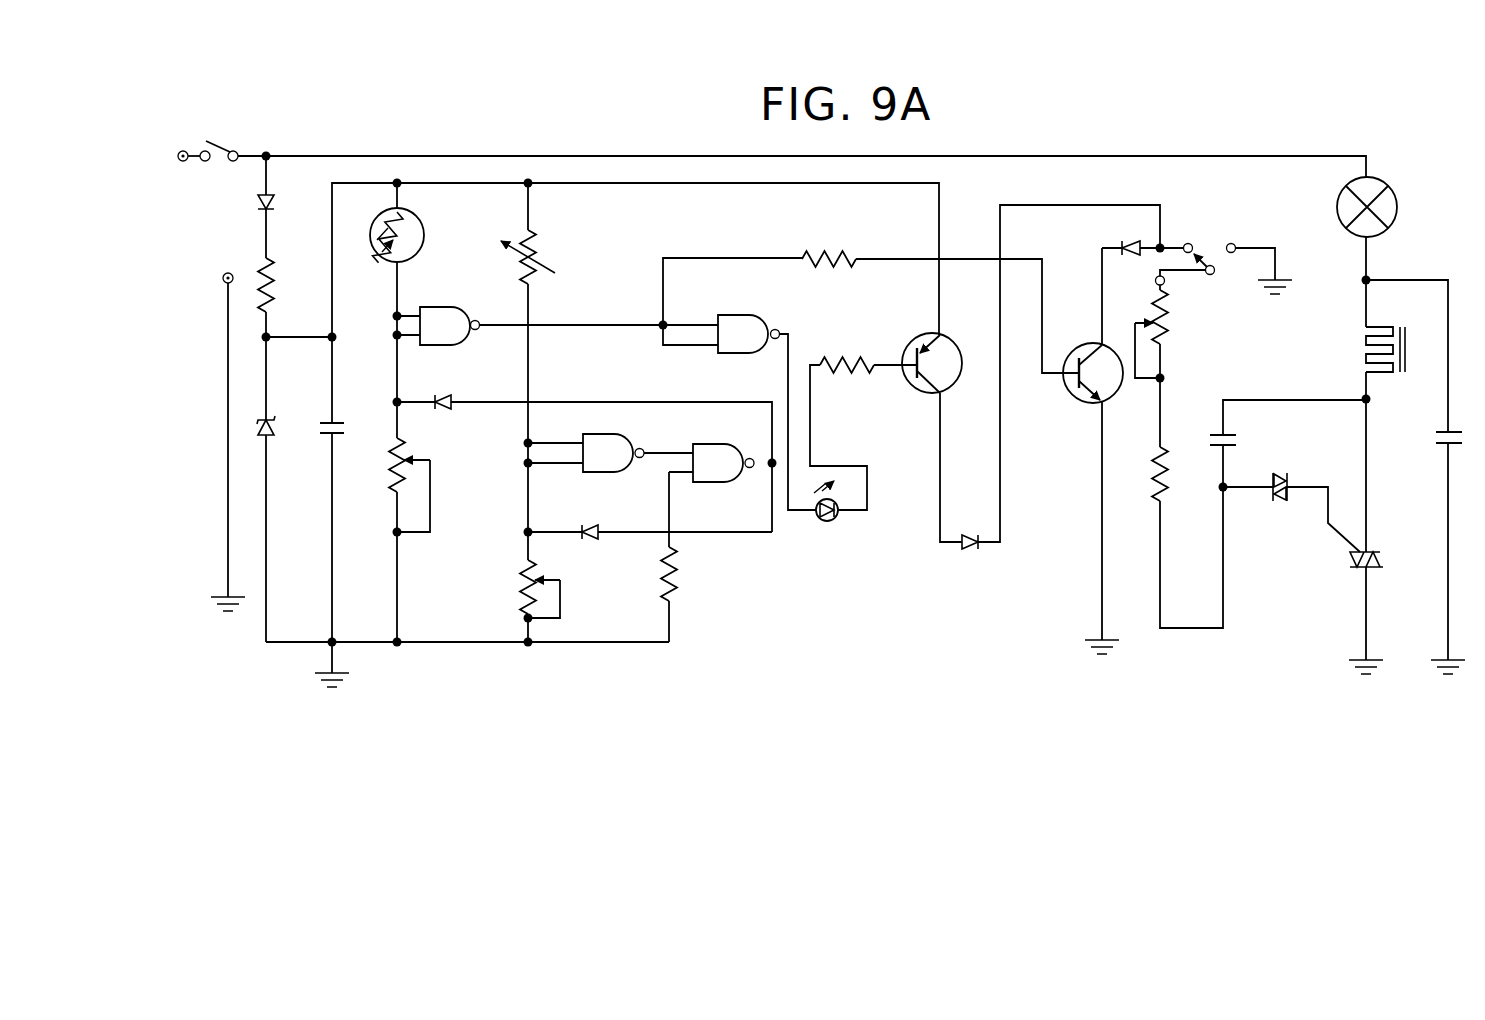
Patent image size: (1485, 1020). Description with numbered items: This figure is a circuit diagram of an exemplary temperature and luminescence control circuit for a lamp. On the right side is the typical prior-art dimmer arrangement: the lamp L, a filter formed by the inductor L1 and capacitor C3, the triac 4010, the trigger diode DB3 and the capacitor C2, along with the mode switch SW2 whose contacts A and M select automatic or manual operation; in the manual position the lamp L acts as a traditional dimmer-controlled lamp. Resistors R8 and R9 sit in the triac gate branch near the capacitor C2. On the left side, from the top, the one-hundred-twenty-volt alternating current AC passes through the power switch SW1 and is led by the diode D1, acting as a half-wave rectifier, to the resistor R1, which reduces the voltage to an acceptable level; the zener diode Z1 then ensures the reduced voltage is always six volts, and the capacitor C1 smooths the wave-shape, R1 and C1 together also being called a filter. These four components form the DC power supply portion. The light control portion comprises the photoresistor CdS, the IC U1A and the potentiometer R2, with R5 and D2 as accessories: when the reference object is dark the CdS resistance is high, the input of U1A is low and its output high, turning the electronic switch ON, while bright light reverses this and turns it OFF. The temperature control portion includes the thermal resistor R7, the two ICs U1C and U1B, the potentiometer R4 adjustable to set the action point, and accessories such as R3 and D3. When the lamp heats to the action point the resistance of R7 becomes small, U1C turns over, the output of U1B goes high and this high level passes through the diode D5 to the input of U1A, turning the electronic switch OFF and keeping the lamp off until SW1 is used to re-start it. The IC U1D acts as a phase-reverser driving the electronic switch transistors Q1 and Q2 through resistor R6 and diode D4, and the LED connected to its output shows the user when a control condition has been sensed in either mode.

The 120V AC current AC is at (189, 218).
The power switch SW1 is at (235, 141).
The diode D1 is at (252, 205).
The resistor R1 is at (281, 285).
The zener diode Z1 is at (258, 416).
The capacitor C1 is at (341, 415).
The photoresistor CdS is at (416, 236).
The IC U1A is at (450, 314).
The IC U1B is at (749, 320).
The IC U1C is at (613, 439).
The IC U1D is at (723, 449).
The diode D2 is at (443, 391).
The potentiometer R2 is at (393, 485).
The variable resistor R5 is at (536, 257).
The diode D3 is at (591, 520).
The resistor R3 is at (684, 574).
The potentiometer R4 is at (528, 589).
The thermal resistor R7 is at (829, 250).
The base resistor R6 is at (847, 353).
The element LED is at (829, 518).
The PNP transistor Q1 is at (939, 355).
The diode D4 is at (972, 533).
The NPN transistor Q2 is at (1093, 361).
The diode D5 is at (1131, 237).
The automatic mode terminal A is at (1189, 237).
The manual mode terminal M is at (1231, 237).
The switch SW2 is at (1215, 279).
The potentiometer R8 is at (1142, 327).
The resistor R9 is at (1148, 474).
The capacitor C2 is at (1232, 430).
The trigger diode DB3 is at (1279, 504).
The triac 4010 is at (1351, 575).
The lamp L is at (1377, 207).
The filter inductor L1 is at (1374, 349).
The filter capacitor C3 is at (1459, 423).